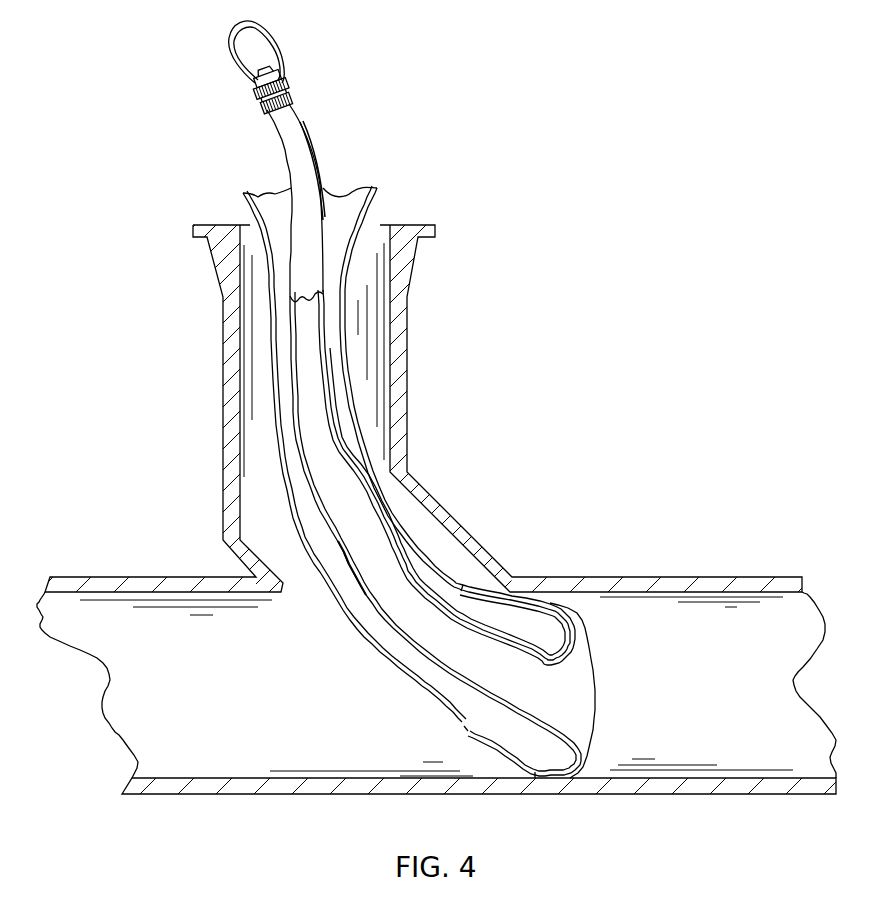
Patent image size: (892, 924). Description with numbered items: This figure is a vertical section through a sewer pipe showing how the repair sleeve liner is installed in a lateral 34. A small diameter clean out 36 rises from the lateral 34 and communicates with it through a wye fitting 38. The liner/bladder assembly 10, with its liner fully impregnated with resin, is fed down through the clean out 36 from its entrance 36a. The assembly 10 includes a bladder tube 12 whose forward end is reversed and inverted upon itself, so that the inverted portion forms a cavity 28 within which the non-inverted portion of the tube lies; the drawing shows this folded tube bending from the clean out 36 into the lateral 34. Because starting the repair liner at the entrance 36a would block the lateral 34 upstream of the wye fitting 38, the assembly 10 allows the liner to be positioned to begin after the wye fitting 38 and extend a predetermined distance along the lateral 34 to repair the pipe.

The liner/bladder assembly 10 is at (357, 353).
The bladder tube 12 is at (353, 408).
The cavity 28 is at (400, 553).
The lateral 34 is at (672, 577).
The clean out 36 is at (223, 372).
The entrance 36a is at (380, 227).
The wye fitting 38 is at (468, 537).